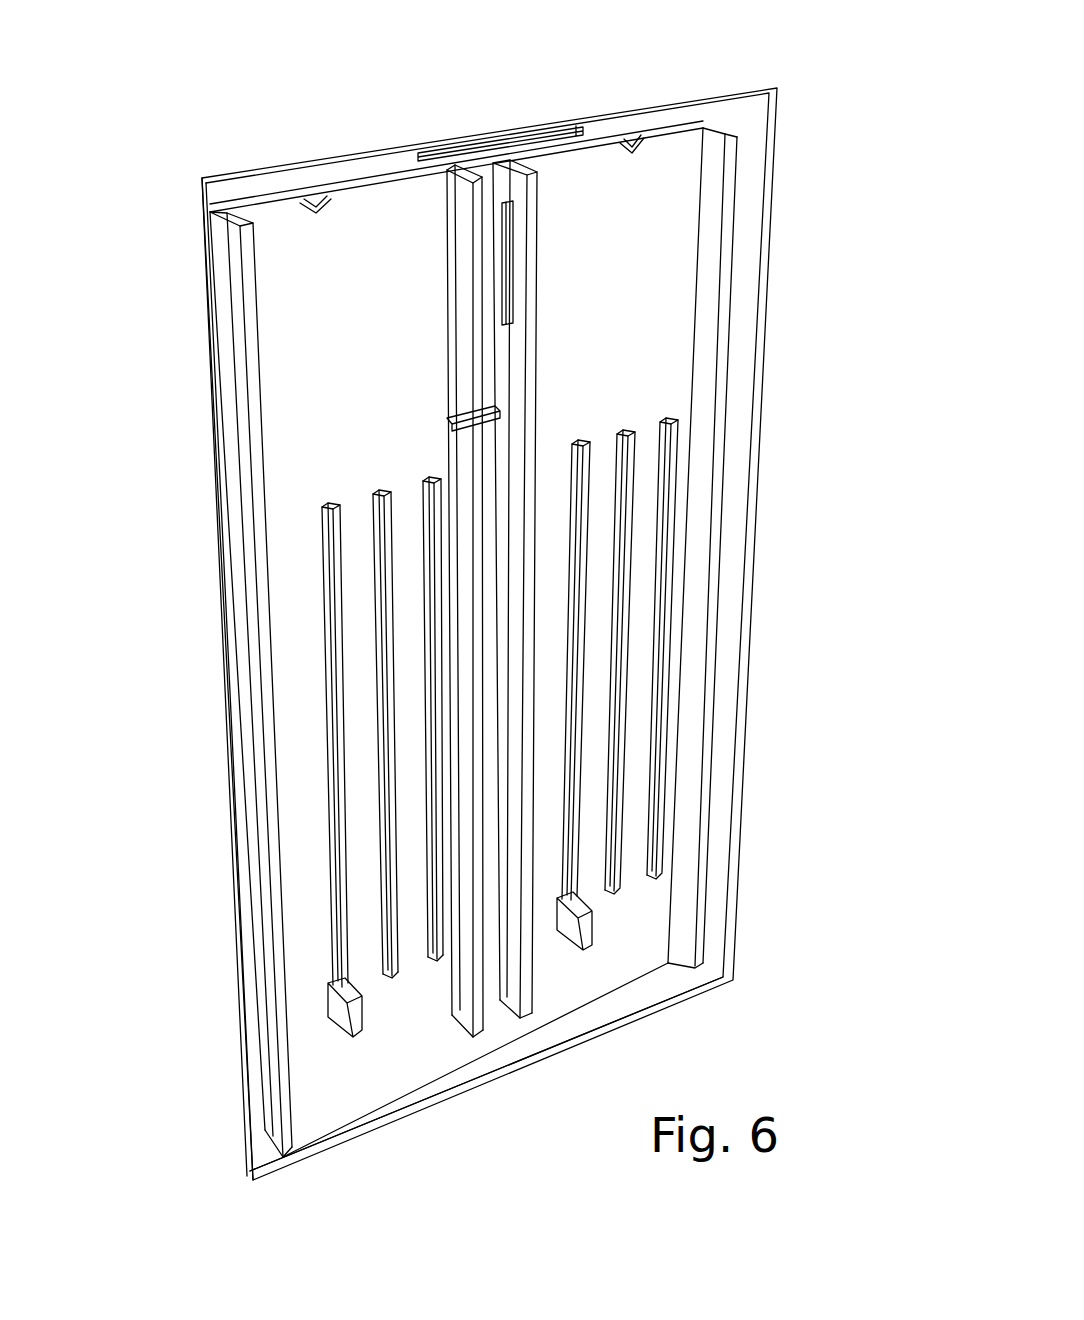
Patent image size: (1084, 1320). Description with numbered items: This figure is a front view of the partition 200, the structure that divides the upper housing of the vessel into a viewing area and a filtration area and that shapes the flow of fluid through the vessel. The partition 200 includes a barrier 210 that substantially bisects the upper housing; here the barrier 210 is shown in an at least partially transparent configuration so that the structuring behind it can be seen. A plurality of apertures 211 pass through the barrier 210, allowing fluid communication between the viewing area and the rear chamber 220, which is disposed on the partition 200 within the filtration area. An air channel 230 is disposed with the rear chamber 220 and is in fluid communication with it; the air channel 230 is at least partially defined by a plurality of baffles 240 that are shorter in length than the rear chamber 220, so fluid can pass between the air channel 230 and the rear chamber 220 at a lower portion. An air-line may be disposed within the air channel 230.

The partition 200 is at (918, 277).
The barrier 210 is at (766, 117).
The apertures 211 is at (640, 690).
The rear chamber 220 is at (316, 211).
The air channel 230 is at (481, 184).
The baffles 240 is at (238, 283).